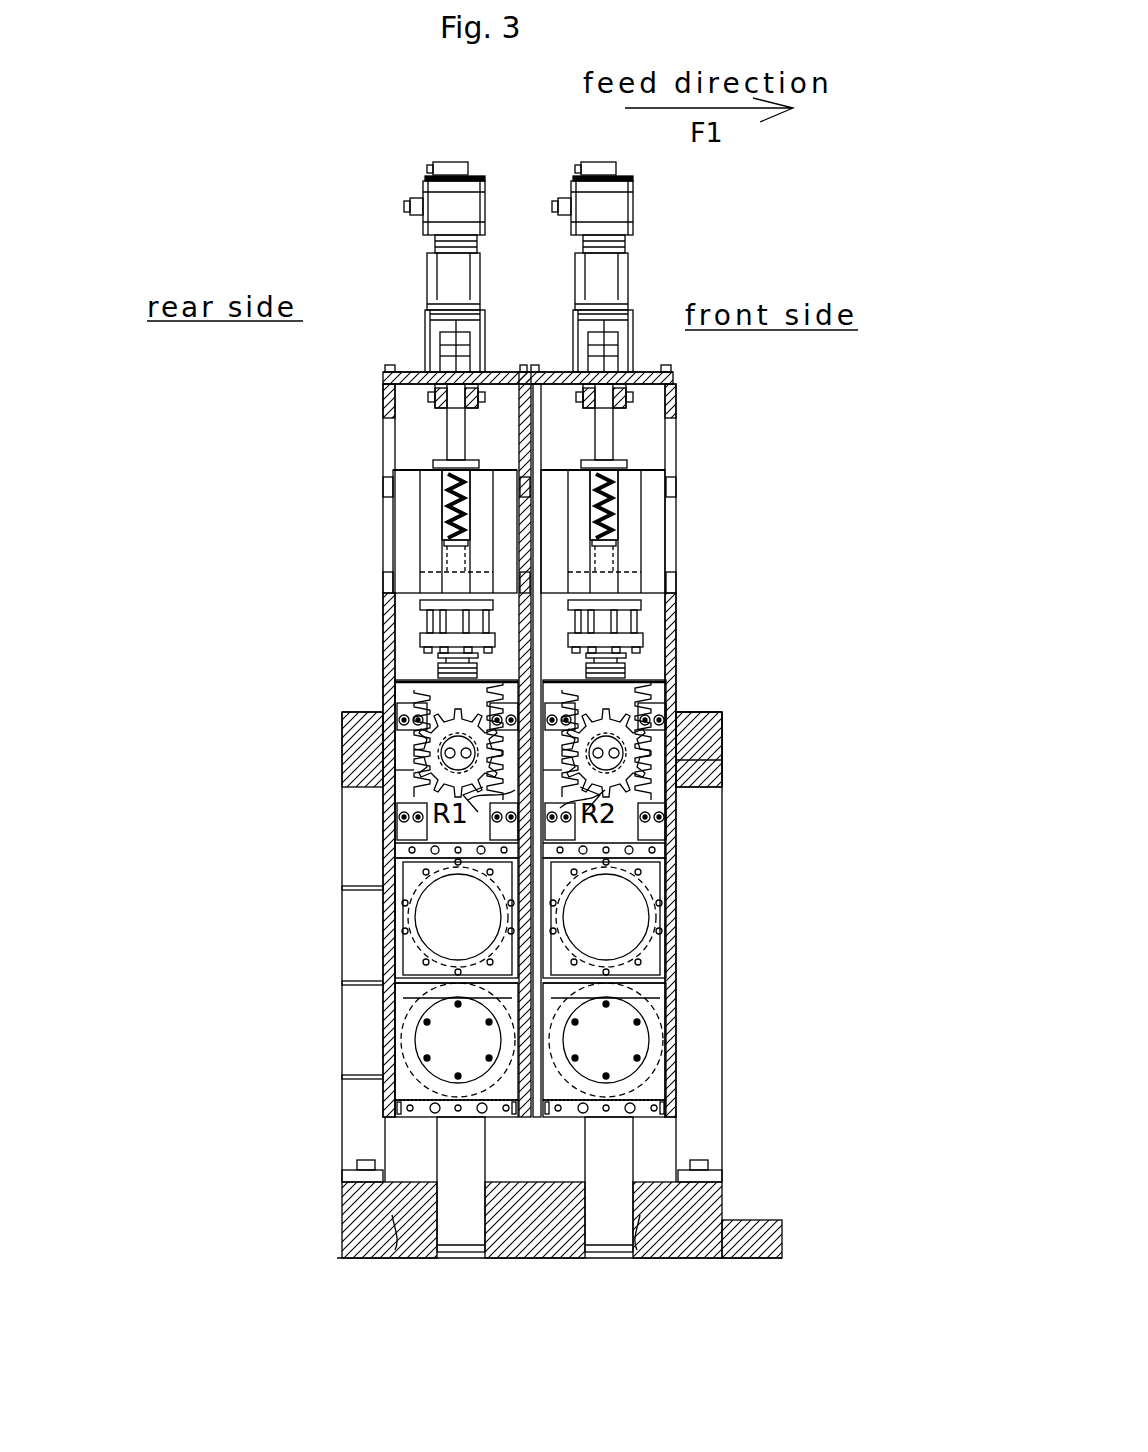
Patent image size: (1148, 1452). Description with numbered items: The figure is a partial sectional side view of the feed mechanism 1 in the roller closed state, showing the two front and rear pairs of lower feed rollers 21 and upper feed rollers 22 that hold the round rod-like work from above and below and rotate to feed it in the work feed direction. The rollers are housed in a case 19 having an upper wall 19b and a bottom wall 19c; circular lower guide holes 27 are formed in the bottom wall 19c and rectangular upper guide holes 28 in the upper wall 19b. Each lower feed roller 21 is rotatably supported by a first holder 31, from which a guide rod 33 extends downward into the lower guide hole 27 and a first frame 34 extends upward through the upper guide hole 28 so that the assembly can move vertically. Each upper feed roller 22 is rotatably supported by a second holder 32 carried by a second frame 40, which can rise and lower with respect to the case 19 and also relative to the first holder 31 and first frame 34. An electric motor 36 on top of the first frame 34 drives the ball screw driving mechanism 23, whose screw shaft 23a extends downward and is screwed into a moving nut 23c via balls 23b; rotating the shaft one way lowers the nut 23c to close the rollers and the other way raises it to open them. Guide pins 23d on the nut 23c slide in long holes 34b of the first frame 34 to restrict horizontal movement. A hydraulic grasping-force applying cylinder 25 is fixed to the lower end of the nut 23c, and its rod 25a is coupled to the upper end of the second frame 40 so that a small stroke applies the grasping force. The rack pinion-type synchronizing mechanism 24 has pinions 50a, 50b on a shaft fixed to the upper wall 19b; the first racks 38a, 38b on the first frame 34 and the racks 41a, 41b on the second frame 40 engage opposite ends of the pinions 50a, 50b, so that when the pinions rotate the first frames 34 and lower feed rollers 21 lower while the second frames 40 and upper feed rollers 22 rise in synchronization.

The feed mechanism 1 is at (340, 227).
The case 19 is at (312, 895).
The upper wall 19b is at (700, 751).
The bottom wall 19c is at (430, 1217).
The lower feed roller 21 is at (456, 990).
The upper feed roller 22 is at (424, 940).
The ball screw driving mechanism 23 is at (375, 522).
The screw shaft 23a is at (455, 440).
The balls 23b is at (452, 513).
The moving nut 23c is at (430, 556).
The guide pin 23d is at (390, 487).
The rack pinion-type synchronizing mechanism 24 is at (376, 759).
The grasping-force applying cylinder 25 is at (440, 625).
The rod 25a is at (445, 672).
The lower guide hole 27 is at (397, 1255).
The upper guide hole 28 is at (706, 733).
The first holder 31 is at (412, 1060).
The second holder 32 is at (430, 968).
The guide rod 33 is at (457, 1203).
The first frame 34 is at (388, 392).
The long hole 34b is at (392, 456).
The electric motor 36 is at (445, 292).
The first rack 38a is at (447, 697).
The first rack 38b is at (340, 731).
The second frame 40 is at (448, 695).
The second rack 41a is at (503, 800).
The first rack 41b is at (400, 808).
The pinion 50a is at (342, 776).
The pinion 50b is at (680, 760).